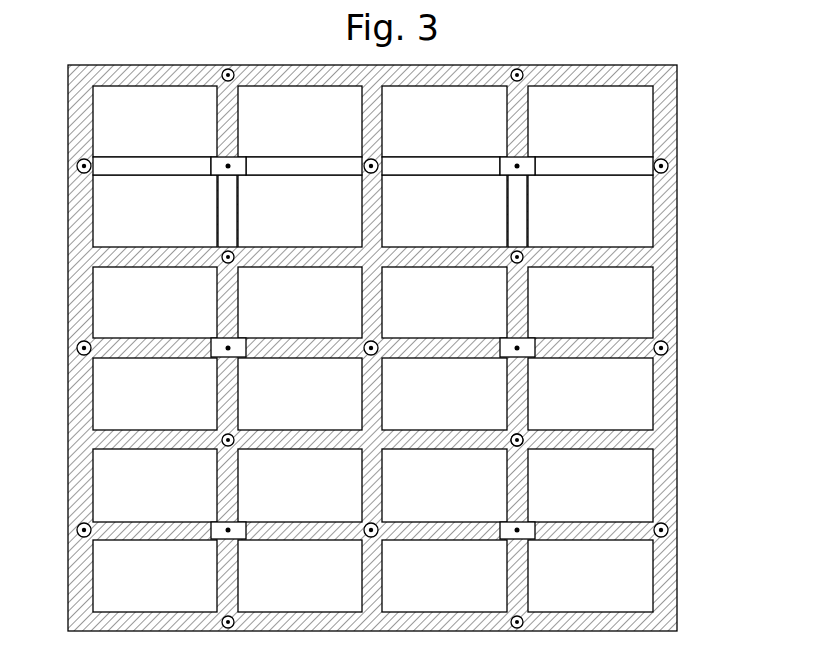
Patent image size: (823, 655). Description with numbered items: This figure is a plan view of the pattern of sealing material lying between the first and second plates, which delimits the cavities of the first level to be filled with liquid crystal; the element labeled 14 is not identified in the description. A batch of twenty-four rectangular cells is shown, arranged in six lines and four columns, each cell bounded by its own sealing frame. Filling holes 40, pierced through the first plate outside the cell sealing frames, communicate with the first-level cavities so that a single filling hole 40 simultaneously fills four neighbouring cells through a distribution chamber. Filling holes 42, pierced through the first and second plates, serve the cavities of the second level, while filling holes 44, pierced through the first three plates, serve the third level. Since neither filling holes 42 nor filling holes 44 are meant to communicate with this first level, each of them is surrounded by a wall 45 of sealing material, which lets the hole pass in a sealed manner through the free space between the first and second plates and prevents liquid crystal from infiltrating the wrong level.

The panel 14 is at (756, 122).
The filling hole 40 is at (395, 313).
The filling hole 42 is at (370, 310).
The filling hole 44 is at (378, 326).
The wall 45 is at (527, 437).